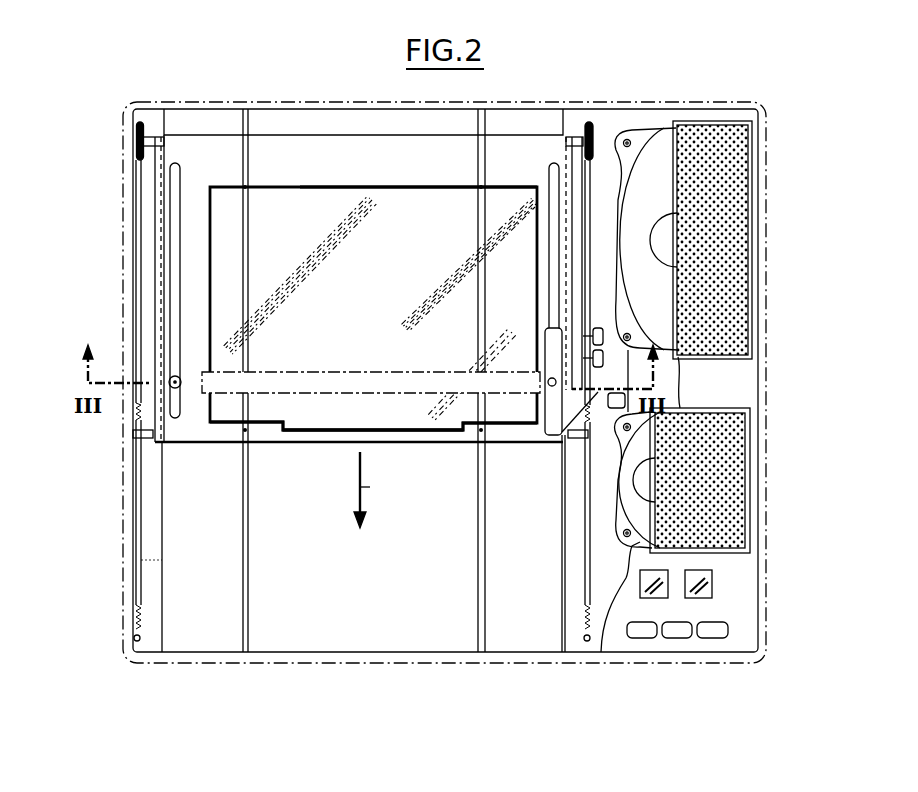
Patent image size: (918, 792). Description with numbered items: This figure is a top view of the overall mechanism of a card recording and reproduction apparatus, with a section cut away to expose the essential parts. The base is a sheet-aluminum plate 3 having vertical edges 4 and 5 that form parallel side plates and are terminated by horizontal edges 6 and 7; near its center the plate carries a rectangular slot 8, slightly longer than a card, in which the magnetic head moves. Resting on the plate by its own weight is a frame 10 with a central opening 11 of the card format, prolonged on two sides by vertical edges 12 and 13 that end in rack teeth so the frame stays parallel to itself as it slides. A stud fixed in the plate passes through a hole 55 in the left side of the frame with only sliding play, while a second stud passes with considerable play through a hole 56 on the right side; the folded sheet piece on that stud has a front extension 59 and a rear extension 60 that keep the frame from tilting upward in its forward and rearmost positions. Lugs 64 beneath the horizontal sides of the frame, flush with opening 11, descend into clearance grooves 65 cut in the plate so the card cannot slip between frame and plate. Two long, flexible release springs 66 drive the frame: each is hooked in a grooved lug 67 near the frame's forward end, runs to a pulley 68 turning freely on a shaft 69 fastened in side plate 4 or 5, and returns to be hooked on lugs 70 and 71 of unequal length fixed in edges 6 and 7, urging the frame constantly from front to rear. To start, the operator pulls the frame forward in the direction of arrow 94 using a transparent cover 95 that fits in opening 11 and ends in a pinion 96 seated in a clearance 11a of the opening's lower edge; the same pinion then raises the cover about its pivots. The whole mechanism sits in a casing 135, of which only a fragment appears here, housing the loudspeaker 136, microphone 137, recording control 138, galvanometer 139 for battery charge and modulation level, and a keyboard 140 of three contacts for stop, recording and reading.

The plate 3 is at (385, 598).
The vertical edge 4 is at (160, 533).
The vertical edge 5 is at (563, 618).
The horizontal edge 6 is at (150, 573).
The horizontal edge 7 is at (602, 597).
The rectangular slot 8 is at (314, 380).
The frame 10 is at (313, 160).
The central opening 11 is at (390, 190).
The clearance 11a is at (432, 430).
The vertical edge 12 is at (155, 265).
The vertical edge 13 is at (573, 240).
The hole 55 is at (168, 305).
The hole 56 is at (560, 278).
The front extension 59 is at (553, 434).
The rear extension 60 is at (548, 338).
The lugs 64 is at (248, 184).
The clearance grooves 65 is at (248, 543).
The release springs 66 is at (136, 212).
The lug 67 is at (140, 437).
The pulley 68 is at (136, 131).
The shaft 69 is at (150, 137).
The lug 70 is at (134, 638).
The lug 71 is at (589, 642).
The arrow 94 is at (376, 490).
The transparent cover 95 is at (427, 222).
The pinion 96 is at (336, 428).
The casing 135 is at (732, 610).
The loudspeaker 136 is at (655, 310).
The microphone 137 is at (652, 437).
The recording control 138 is at (655, 585).
The galvanometer 139 is at (700, 585).
The keyboard 140 is at (676, 648).